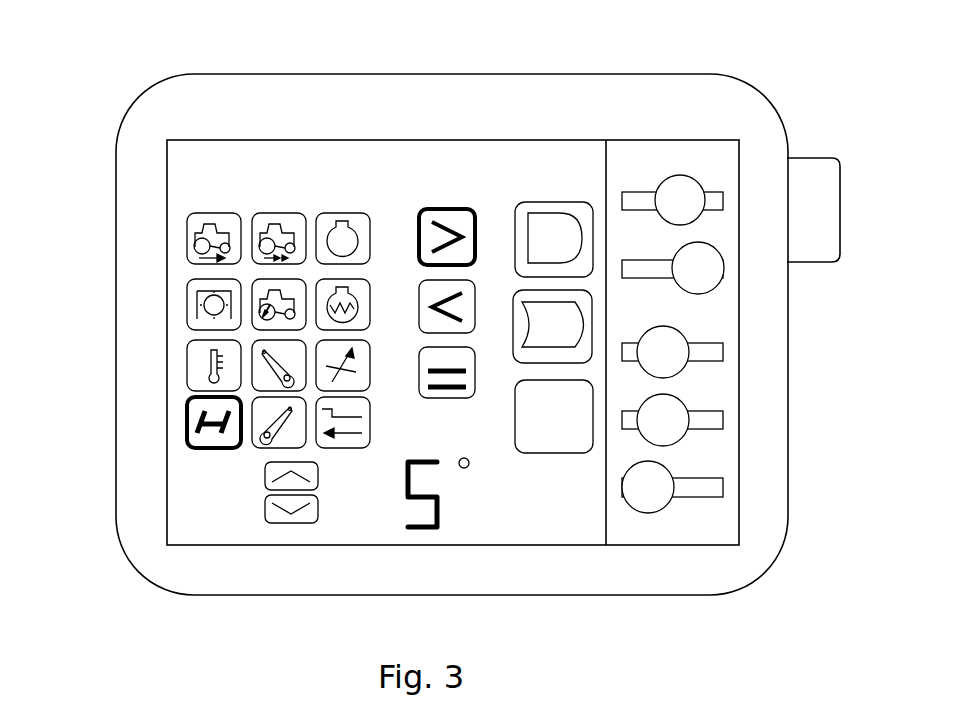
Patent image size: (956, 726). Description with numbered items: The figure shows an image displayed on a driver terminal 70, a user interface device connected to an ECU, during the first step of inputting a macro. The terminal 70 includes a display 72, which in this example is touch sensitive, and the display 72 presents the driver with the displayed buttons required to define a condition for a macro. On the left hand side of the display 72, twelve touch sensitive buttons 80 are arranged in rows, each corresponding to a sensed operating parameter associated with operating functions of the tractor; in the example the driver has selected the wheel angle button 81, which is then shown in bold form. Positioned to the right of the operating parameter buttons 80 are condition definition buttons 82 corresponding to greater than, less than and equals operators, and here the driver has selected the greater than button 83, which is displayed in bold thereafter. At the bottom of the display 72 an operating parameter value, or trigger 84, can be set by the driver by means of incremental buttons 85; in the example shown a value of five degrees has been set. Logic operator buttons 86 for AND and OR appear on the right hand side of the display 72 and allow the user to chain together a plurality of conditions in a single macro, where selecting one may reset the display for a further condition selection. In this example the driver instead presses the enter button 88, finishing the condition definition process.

The terminal 70 is at (140, 567).
The display 72 is at (165, 463).
The touch sensitive buttons 80 is at (207, 330).
The wheel angle button 81 is at (151, 422).
The condition definition buttons 82 is at (470, 418).
The greater than button 83 is at (417, 263).
The trigger 84 is at (405, 528).
The incremental buttons 85 is at (260, 524).
The logic operator buttons 86 is at (573, 290).
The enter button 88 is at (570, 453).